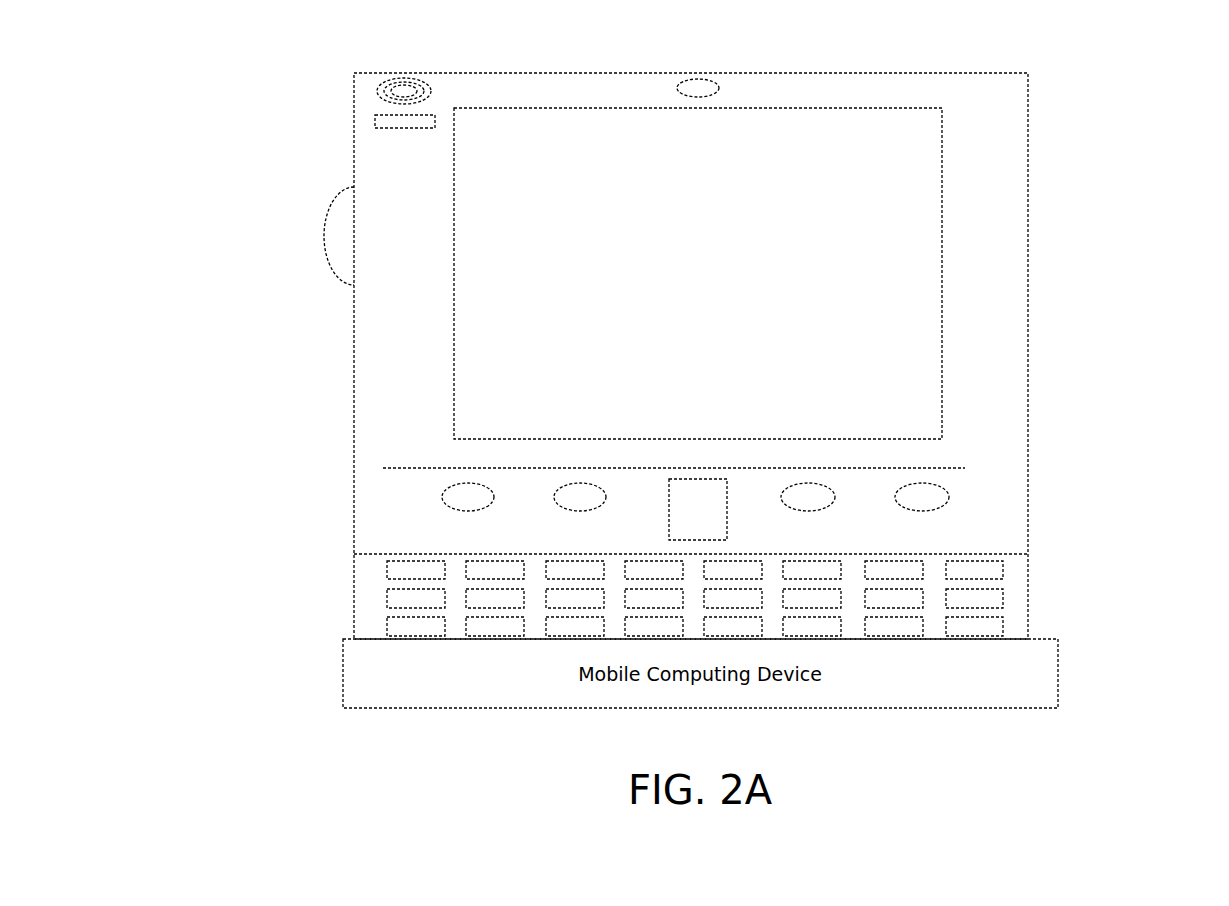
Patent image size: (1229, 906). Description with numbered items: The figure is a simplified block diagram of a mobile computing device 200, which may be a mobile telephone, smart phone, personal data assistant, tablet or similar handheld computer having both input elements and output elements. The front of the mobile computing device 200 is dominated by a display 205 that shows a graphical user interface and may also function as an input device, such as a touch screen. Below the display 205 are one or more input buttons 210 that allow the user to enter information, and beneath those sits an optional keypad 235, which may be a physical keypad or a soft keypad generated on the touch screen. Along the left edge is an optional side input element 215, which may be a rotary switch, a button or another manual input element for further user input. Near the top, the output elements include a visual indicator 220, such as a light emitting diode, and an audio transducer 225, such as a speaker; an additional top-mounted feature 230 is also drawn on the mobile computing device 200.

The mobile computing device 200 is at (1014, 85).
The display 205 is at (605, 382).
The input buttons 210 is at (697, 513).
The side input element 215 is at (341, 234).
The visual indicator 220 is at (378, 128).
The audio transducer 225 is at (380, 91).
The speaker 230 is at (712, 88).
The keypad 235 is at (368, 628).